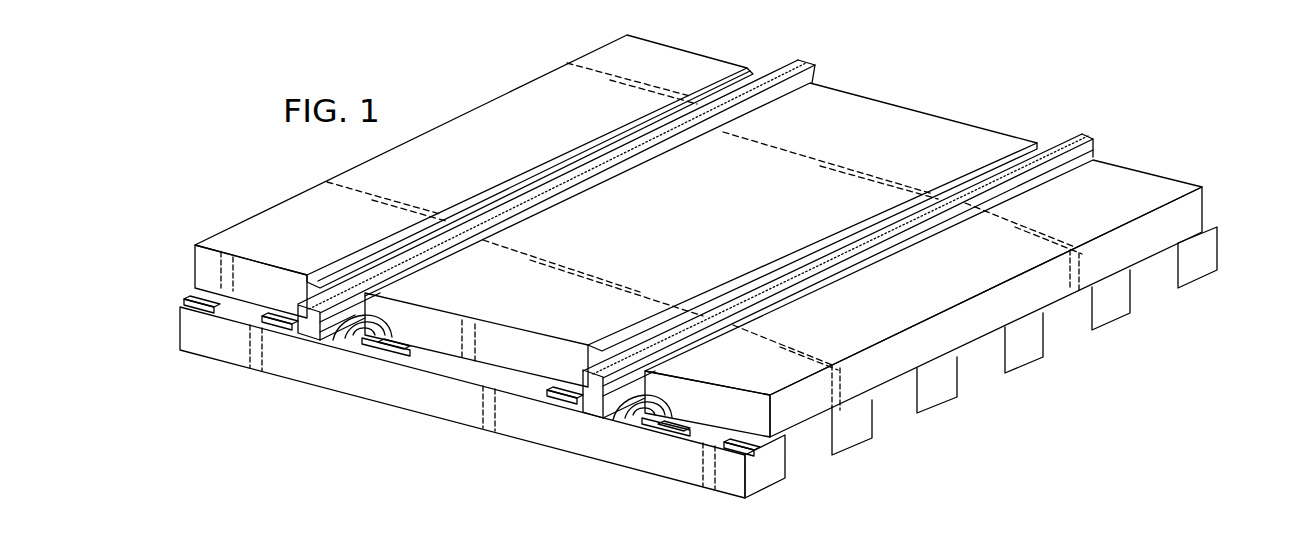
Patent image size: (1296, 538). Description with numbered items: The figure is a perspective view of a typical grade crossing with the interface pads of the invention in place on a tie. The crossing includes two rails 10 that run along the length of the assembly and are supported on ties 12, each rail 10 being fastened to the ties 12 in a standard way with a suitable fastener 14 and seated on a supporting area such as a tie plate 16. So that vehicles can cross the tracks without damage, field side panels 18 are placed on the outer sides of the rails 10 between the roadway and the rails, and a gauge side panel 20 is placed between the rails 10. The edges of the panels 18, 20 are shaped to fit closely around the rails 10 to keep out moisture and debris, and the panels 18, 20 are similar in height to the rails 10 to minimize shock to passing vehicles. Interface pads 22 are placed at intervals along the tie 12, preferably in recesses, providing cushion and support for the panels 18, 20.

The rail 10 is at (813, 63).
The tie 12 is at (765, 470).
The fastener 14 is at (330, 347).
The tie plate 16 is at (355, 352).
The panel 18 is at (670, 60).
The gauge side panel 20 is at (885, 118).
The interface pad 22 is at (202, 312).